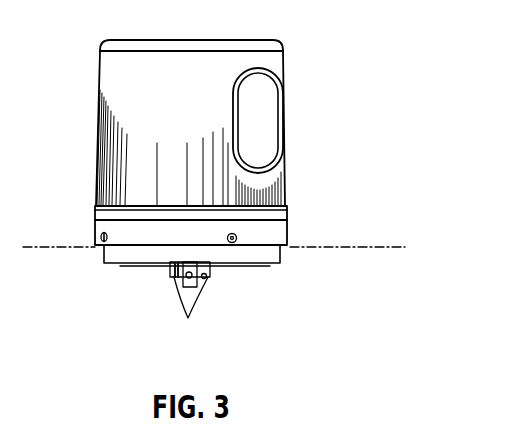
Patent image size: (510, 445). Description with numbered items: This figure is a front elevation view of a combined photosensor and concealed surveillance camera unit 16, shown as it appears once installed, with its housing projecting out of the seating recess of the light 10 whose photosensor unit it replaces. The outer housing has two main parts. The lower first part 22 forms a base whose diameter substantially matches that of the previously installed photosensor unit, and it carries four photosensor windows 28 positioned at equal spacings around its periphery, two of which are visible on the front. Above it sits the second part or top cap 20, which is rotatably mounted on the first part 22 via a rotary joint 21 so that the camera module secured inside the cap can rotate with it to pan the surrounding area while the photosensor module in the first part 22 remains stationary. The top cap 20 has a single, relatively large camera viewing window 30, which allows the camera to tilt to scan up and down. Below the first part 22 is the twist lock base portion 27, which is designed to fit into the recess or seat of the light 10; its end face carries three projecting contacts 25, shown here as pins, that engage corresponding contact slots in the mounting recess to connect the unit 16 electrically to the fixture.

The light 10 is at (387, 243).
The combined photosensor and concealed surveillance camera unit 16 is at (295, 130).
The top cap 20 is at (274, 192).
The rotary joint 21 is at (291, 215).
The first part 22 is at (291, 232).
The projecting contacts 25 is at (190, 306).
The twist lock base portion 27 is at (117, 257).
The photosensor windows 28 is at (101, 236).
The camera viewing window 30 is at (266, 92).